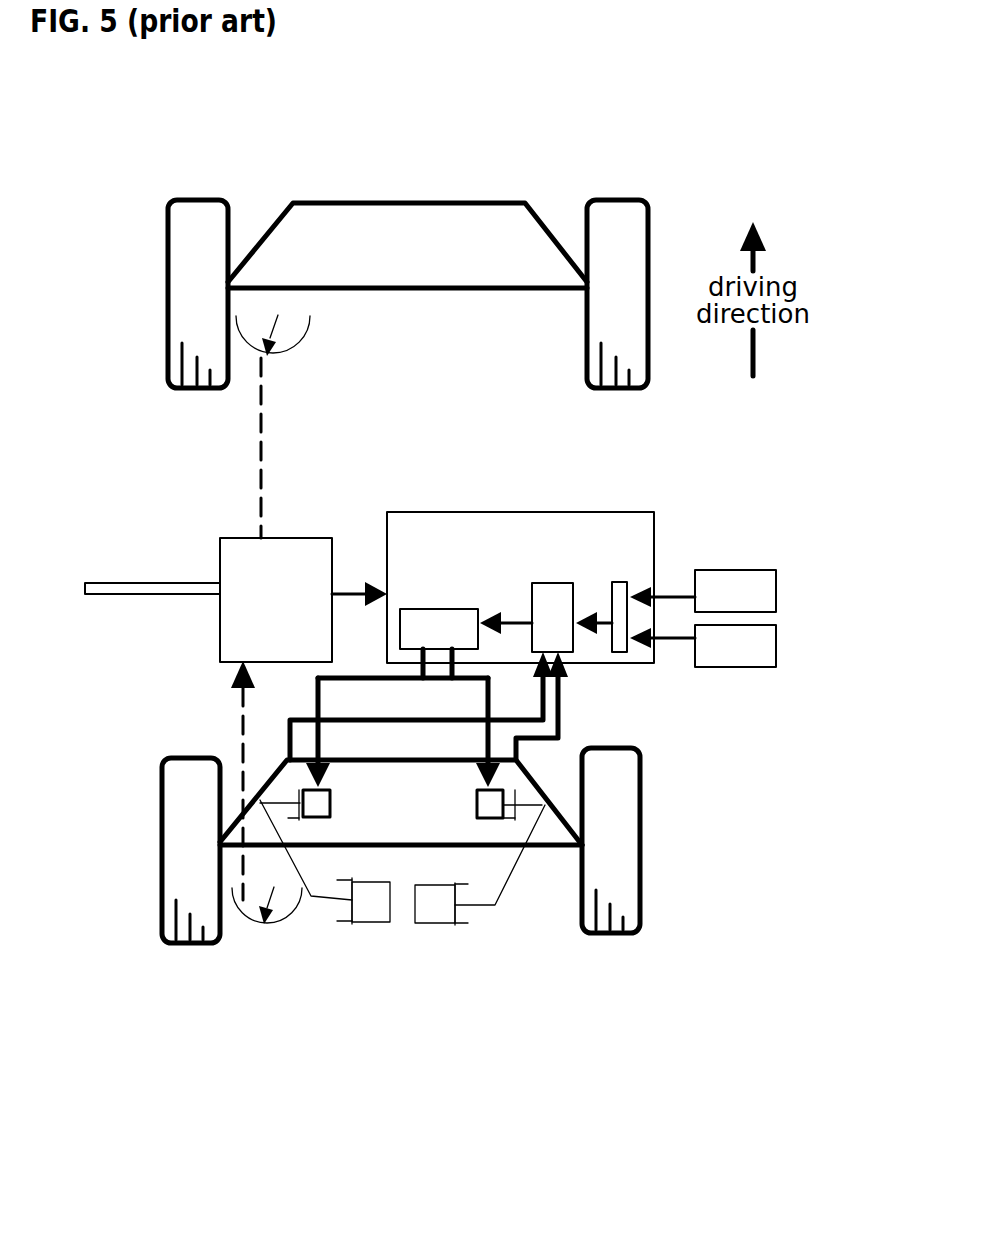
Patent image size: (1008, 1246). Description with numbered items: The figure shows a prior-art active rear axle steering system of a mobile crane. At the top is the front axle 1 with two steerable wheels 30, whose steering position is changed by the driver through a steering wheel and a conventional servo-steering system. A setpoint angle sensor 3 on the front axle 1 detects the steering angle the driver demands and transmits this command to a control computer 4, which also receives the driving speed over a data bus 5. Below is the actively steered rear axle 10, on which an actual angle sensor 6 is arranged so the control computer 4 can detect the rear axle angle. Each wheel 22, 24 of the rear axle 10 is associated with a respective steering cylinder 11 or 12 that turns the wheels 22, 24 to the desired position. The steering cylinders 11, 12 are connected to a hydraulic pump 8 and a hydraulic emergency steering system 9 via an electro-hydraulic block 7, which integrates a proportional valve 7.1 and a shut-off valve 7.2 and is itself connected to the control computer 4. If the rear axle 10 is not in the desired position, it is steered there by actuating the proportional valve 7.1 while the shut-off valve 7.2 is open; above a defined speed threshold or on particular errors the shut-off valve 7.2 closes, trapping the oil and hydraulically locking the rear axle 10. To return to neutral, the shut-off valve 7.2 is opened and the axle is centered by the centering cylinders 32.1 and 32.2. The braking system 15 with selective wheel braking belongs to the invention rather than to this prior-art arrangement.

The steerable wheels 30 is at (203, 253).
The front axle 1 is at (227, 284).
The setpoint angle sensor 3 is at (250, 330).
The control computer 4 is at (233, 552).
The data bus 5 is at (190, 592).
The wheel 22 is at (170, 758).
The electro-hydraulic block 7 is at (611, 560).
The proportional valve 7.1 is at (465, 623).
The shut-off valve 7.2 is at (558, 610).
The hydraulic pump 8 is at (763, 595).
The hydraulic emergency steering system 9 is at (763, 652).
The steering cylinder 11 is at (287, 762).
The rear axle 10 is at (262, 840).
The steering cylinder 12 is at (480, 813).
The actual angle sensor 6 is at (213, 887).
The wheel 24 is at (605, 777).
The braking system 15 is at (190, 872).
The centering cylinder 32.1 is at (368, 908).
The centering cylinder 32.2 is at (433, 910).